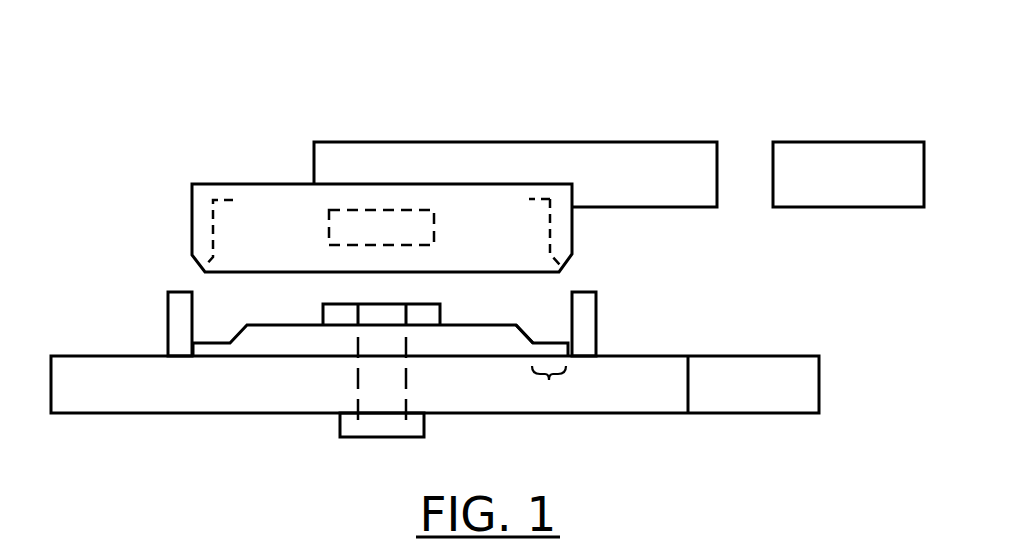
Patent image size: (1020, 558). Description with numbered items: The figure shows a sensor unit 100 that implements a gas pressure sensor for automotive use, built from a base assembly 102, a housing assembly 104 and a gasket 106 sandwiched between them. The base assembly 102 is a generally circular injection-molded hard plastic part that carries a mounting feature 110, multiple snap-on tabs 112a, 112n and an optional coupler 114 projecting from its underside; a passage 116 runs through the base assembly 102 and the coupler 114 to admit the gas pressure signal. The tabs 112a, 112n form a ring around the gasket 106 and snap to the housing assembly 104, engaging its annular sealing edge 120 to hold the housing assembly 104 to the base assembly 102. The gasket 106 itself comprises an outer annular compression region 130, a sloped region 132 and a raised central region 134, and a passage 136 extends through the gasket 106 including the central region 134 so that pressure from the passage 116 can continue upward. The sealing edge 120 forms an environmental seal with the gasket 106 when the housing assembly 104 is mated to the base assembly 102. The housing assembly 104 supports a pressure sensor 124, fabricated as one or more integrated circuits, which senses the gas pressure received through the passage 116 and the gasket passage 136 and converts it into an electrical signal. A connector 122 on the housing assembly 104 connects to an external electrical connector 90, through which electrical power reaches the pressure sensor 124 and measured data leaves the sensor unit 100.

The external electrical connector 90 is at (855, 141).
The sensor unit 100 is at (388, 37).
The base assembly 102 is at (95, 355).
The housing assembly 104 is at (255, 182).
The gasket 106 is at (275, 323).
The mounting feature 110 is at (759, 356).
The tab 112a is at (177, 291).
The tab 112n is at (585, 290).
The coupler 114 is at (340, 428).
The passage 116 is at (358, 382).
The annular sealing edge 120 is at (214, 225).
The connector 122 is at (480, 141).
The pressure sensor 124 is at (435, 227).
The compression region 130 is at (549, 387).
The sloped region 132 is at (533, 336).
The central region 134 is at (418, 304).
The passage 136 is at (358, 338).